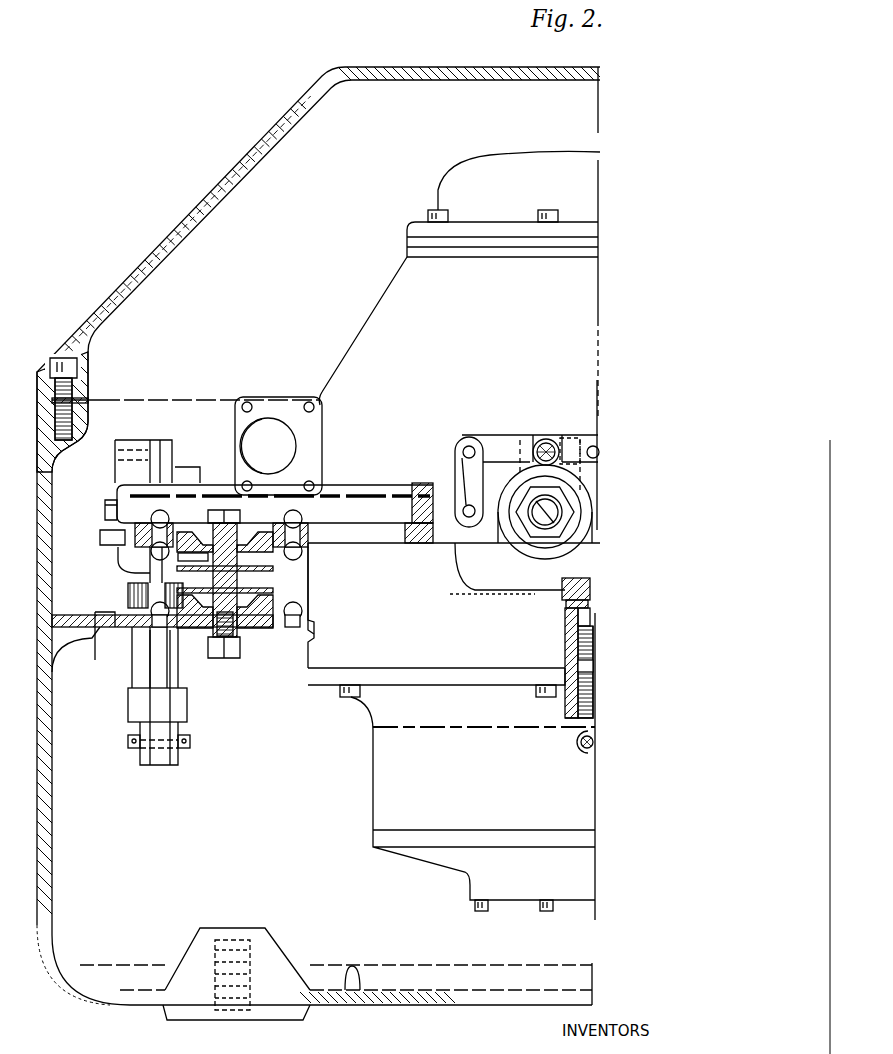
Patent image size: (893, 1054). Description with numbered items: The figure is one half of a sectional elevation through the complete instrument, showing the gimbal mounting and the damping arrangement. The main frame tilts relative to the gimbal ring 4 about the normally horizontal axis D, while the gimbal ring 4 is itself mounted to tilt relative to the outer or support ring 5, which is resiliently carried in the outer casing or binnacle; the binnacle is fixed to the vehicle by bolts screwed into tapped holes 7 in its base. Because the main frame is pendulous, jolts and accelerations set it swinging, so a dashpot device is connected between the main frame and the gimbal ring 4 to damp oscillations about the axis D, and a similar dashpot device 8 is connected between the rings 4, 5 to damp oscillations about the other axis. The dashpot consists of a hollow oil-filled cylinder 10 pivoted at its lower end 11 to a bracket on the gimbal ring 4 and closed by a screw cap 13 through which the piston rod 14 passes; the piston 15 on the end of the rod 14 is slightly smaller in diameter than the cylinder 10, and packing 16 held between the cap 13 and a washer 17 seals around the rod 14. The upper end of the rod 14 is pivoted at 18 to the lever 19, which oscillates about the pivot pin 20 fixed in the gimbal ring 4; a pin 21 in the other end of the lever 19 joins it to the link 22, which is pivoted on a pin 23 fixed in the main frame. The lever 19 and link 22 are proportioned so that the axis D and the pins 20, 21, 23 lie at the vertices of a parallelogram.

The gimbal ring 4 is at (436, 482).
The outer or support ring 5 is at (376, 487).
The tapped holes 7 is at (230, 1010).
The dashpot device 8 is at (130, 708).
The cylinder 10 is at (572, 657).
The lower end 11 is at (590, 757).
The screw cap 13 is at (567, 591).
The piston rod 14 is at (590, 632).
The piston 15 is at (550, 691).
The packing 16 is at (572, 606).
The washer 17 is at (581, 621).
The pivot 18 is at (594, 446).
The lever 19 is at (572, 438).
The pivot pin 20 is at (548, 439).
The pin 21 is at (486, 447).
The link 22 is at (474, 448).
The pin 23 is at (459, 436).
The axis DD' D is at (537, 521).